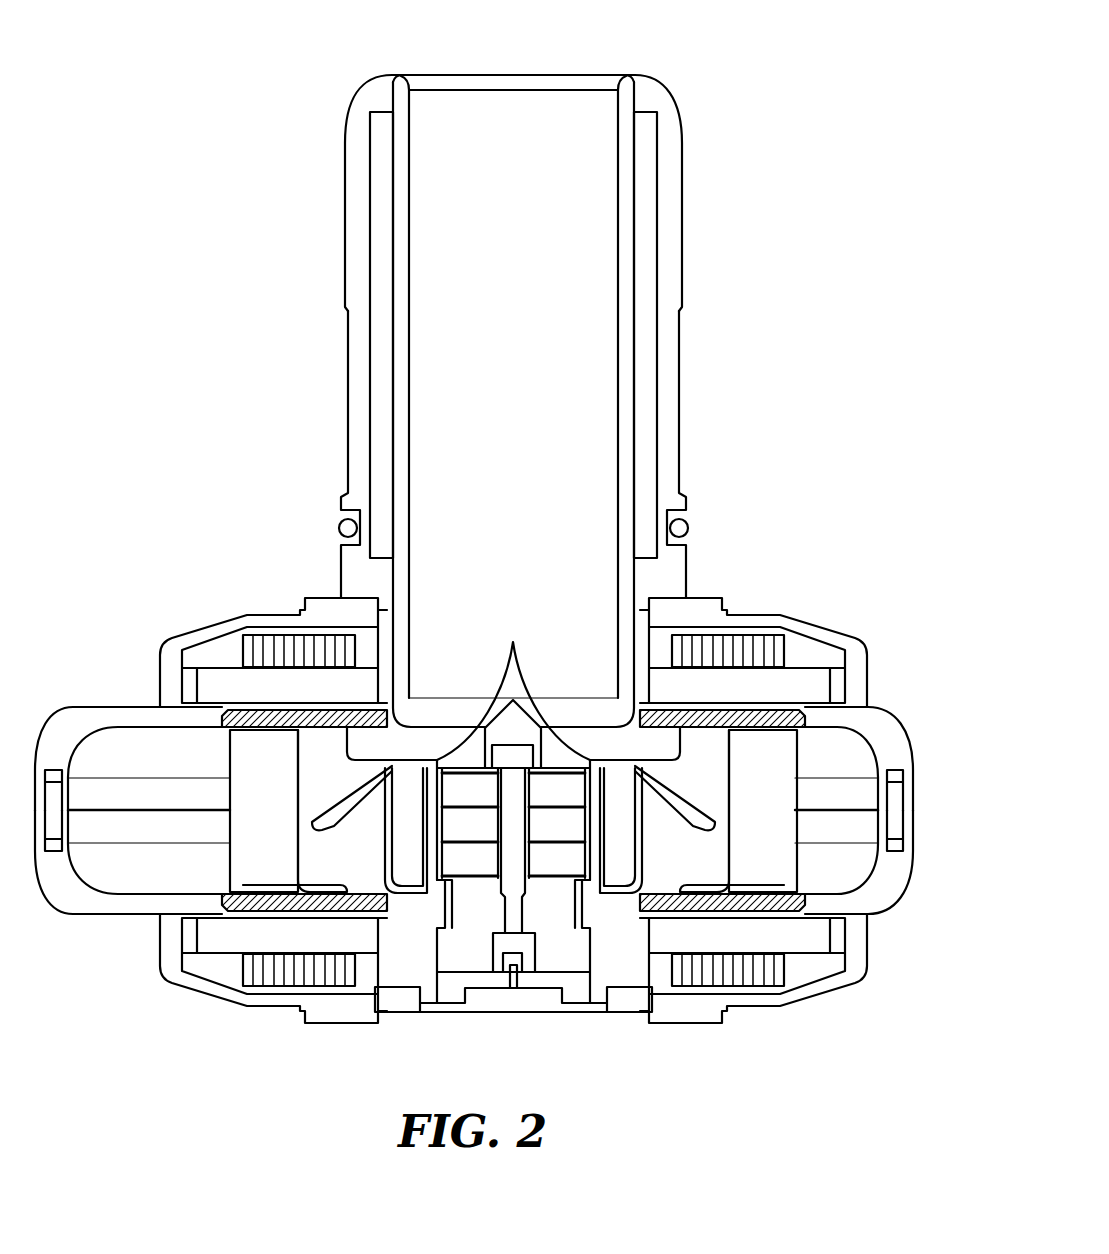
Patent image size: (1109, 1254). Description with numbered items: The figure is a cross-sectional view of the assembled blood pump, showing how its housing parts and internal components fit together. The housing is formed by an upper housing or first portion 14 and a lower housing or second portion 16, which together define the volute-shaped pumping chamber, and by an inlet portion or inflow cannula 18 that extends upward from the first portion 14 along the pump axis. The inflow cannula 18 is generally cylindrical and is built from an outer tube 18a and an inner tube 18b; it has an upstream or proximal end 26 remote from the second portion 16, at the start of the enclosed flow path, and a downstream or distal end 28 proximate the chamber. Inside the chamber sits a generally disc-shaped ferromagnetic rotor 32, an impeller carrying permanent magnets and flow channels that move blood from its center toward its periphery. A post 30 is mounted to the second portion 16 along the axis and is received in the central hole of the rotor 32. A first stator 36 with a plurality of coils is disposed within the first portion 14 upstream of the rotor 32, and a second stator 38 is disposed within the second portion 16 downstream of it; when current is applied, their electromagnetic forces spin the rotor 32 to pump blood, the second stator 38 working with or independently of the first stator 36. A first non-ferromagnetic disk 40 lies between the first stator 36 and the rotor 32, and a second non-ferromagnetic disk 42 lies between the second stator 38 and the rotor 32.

The first portion 14 is at (65, 706).
The second portion 16 is at (73, 913).
The inflow cannula 18 is at (677, 416).
The outer tube 18a is at (681, 212).
The inner tube 18b is at (560, 342).
The upstream end 26 is at (642, 82).
The downstream end 28 is at (660, 720).
The post 30 is at (514, 643).
The rotor 32 is at (770, 772).
The first stator 36 is at (280, 645).
The second stator 38 is at (270, 982).
The first non-ferromagnetic disk 40 is at (250, 716).
The second non-ferromagnetic disk 42 is at (287, 897).